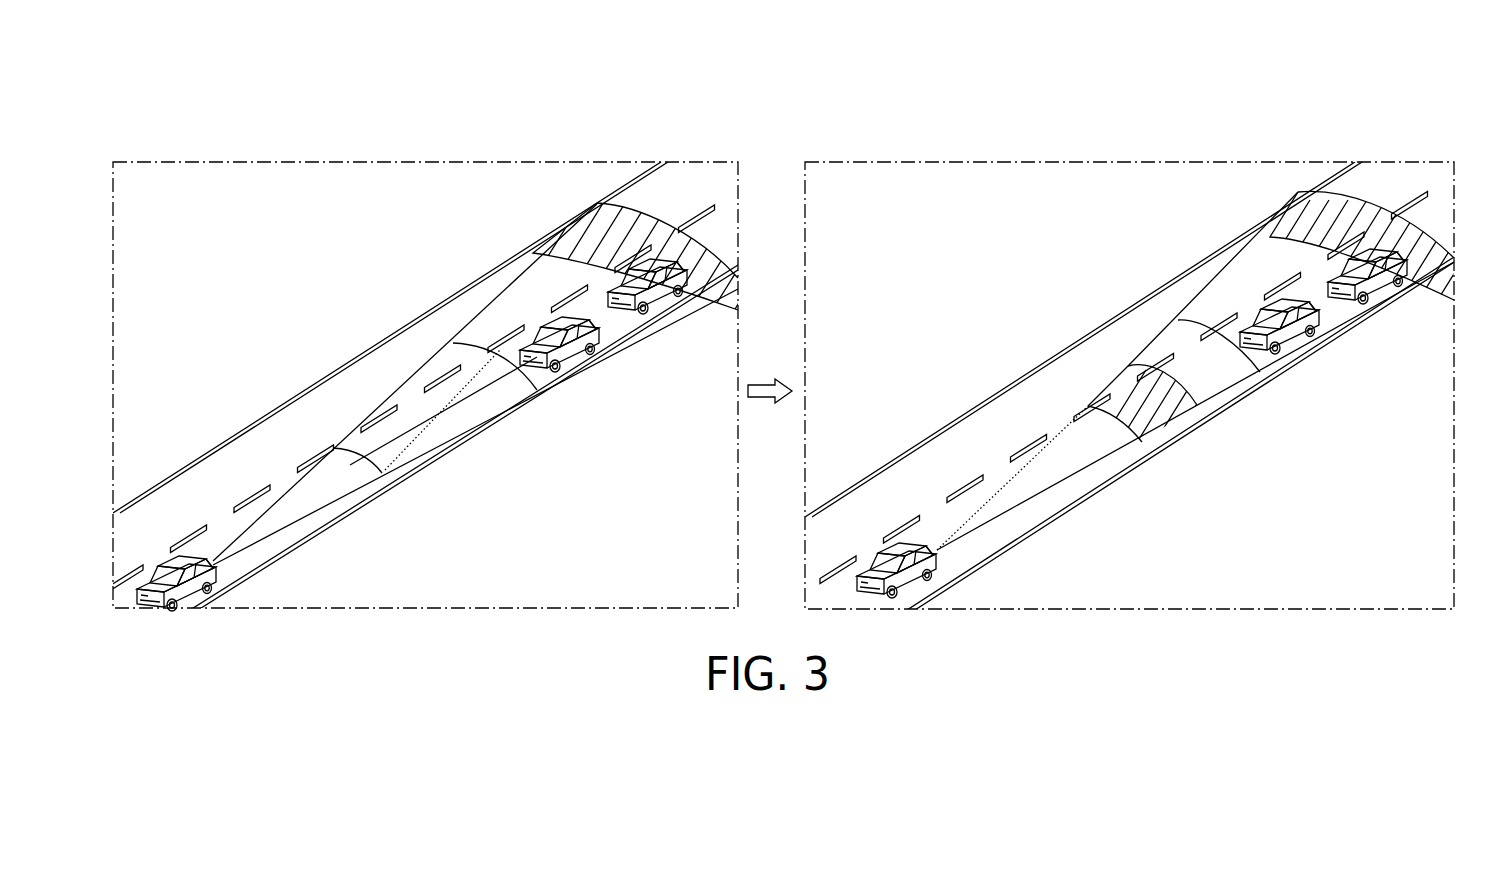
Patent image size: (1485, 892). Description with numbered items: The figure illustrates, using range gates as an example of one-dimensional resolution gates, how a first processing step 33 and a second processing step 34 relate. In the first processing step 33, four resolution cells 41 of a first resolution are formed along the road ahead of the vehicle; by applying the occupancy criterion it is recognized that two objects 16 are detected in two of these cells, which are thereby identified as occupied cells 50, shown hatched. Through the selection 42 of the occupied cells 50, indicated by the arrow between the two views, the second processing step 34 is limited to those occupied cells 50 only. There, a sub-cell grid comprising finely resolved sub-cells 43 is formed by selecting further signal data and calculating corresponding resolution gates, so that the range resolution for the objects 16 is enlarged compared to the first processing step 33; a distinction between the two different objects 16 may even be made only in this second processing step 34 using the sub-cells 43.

The object 16 is at (590, 348).
The first processing step 33 is at (700, 140).
The second processing step 34 is at (1396, 140).
The resolution cell 41 is at (292, 487).
The selection 42 is at (764, 379).
The sub-cell 43 is at (1112, 380).
The occupied cell 50 is at (528, 280).